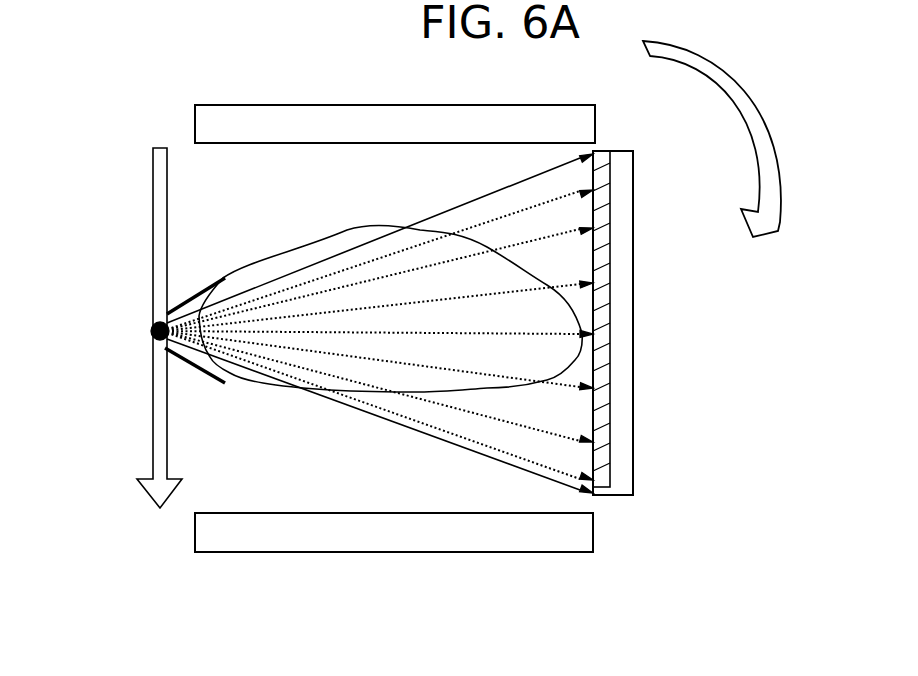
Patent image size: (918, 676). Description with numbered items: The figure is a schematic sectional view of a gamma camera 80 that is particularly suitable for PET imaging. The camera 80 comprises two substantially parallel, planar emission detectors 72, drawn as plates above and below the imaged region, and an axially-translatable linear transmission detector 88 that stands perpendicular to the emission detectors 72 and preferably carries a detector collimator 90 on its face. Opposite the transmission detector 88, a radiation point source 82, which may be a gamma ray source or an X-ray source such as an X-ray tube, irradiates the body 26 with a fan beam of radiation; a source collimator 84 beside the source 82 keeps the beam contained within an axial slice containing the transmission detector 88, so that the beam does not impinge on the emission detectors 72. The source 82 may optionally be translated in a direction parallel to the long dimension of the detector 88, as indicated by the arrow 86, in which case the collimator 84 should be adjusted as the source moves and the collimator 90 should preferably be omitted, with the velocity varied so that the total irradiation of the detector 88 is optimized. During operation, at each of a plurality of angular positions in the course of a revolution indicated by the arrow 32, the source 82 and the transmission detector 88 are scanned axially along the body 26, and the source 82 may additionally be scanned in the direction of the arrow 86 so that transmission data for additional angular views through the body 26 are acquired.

The gamma camera 80 is at (152, 92).
The emission detectors 72 is at (297, 115).
The arrow 86 is at (157, 203).
The radiation point source 82 is at (151, 332).
The source collimator 84 is at (185, 303).
The body 26 is at (258, 274).
The linear transmission detector 88 is at (623, 352).
The detector collimator 90 is at (603, 489).
The arrow 32 is at (733, 73).